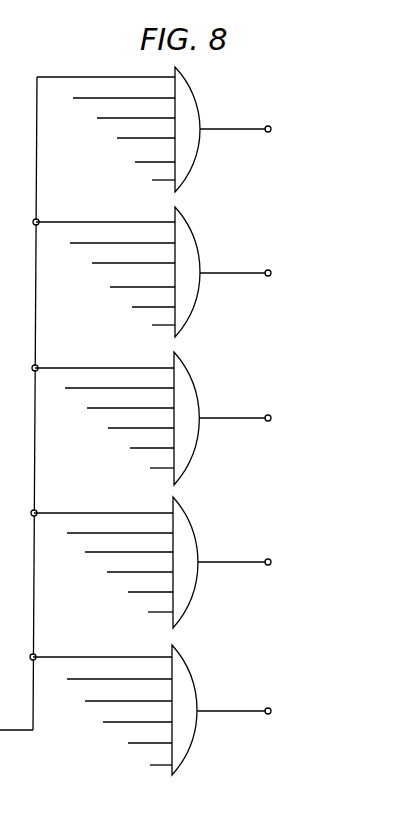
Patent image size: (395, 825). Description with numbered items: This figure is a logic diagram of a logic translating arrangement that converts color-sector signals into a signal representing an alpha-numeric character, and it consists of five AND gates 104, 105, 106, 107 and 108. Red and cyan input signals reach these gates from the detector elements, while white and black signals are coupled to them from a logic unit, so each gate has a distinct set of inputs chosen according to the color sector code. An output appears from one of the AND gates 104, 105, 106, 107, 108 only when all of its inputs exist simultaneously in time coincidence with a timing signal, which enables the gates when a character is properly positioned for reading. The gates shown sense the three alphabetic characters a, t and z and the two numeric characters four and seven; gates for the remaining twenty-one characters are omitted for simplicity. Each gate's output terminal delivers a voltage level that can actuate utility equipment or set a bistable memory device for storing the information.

The AND gate 104 is at (195, 94).
The AND gate 105 is at (193, 233).
The AND gate 106 is at (192, 378).
The AND gate 107 is at (191, 523).
The AND gate 108 is at (190, 671).